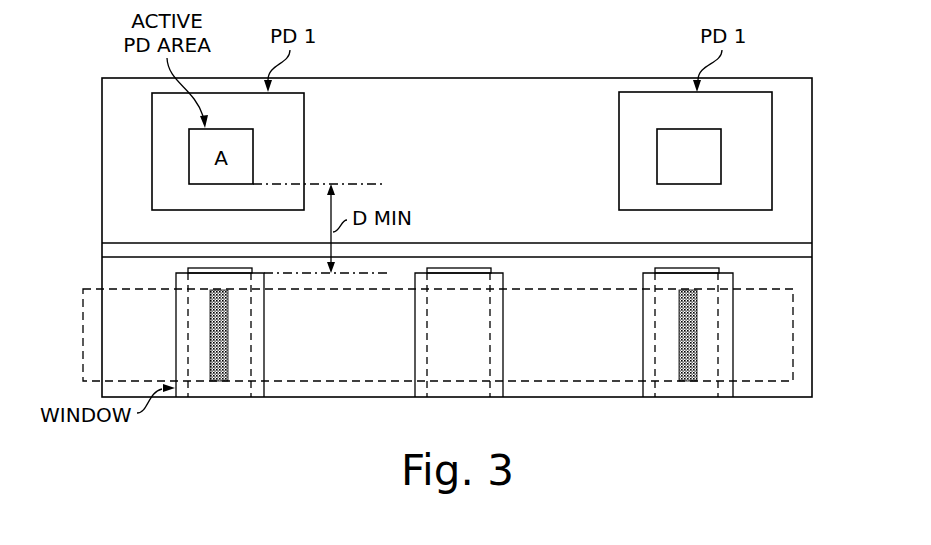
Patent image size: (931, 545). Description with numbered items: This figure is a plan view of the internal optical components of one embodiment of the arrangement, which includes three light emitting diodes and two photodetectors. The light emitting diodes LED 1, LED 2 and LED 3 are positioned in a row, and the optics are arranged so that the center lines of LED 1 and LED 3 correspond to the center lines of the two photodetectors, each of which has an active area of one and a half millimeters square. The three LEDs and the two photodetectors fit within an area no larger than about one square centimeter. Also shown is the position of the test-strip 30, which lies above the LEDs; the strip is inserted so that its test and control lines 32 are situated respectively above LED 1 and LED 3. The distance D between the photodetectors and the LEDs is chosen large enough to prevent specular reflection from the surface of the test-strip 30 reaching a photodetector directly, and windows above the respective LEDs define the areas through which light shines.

The test-strip 30 is at (757, 289).
The test and control lines 32 is at (228, 373).
The LED 1 is at (268, 369).
The LED 2 is at (508, 369).
The LED 3 is at (728, 361).